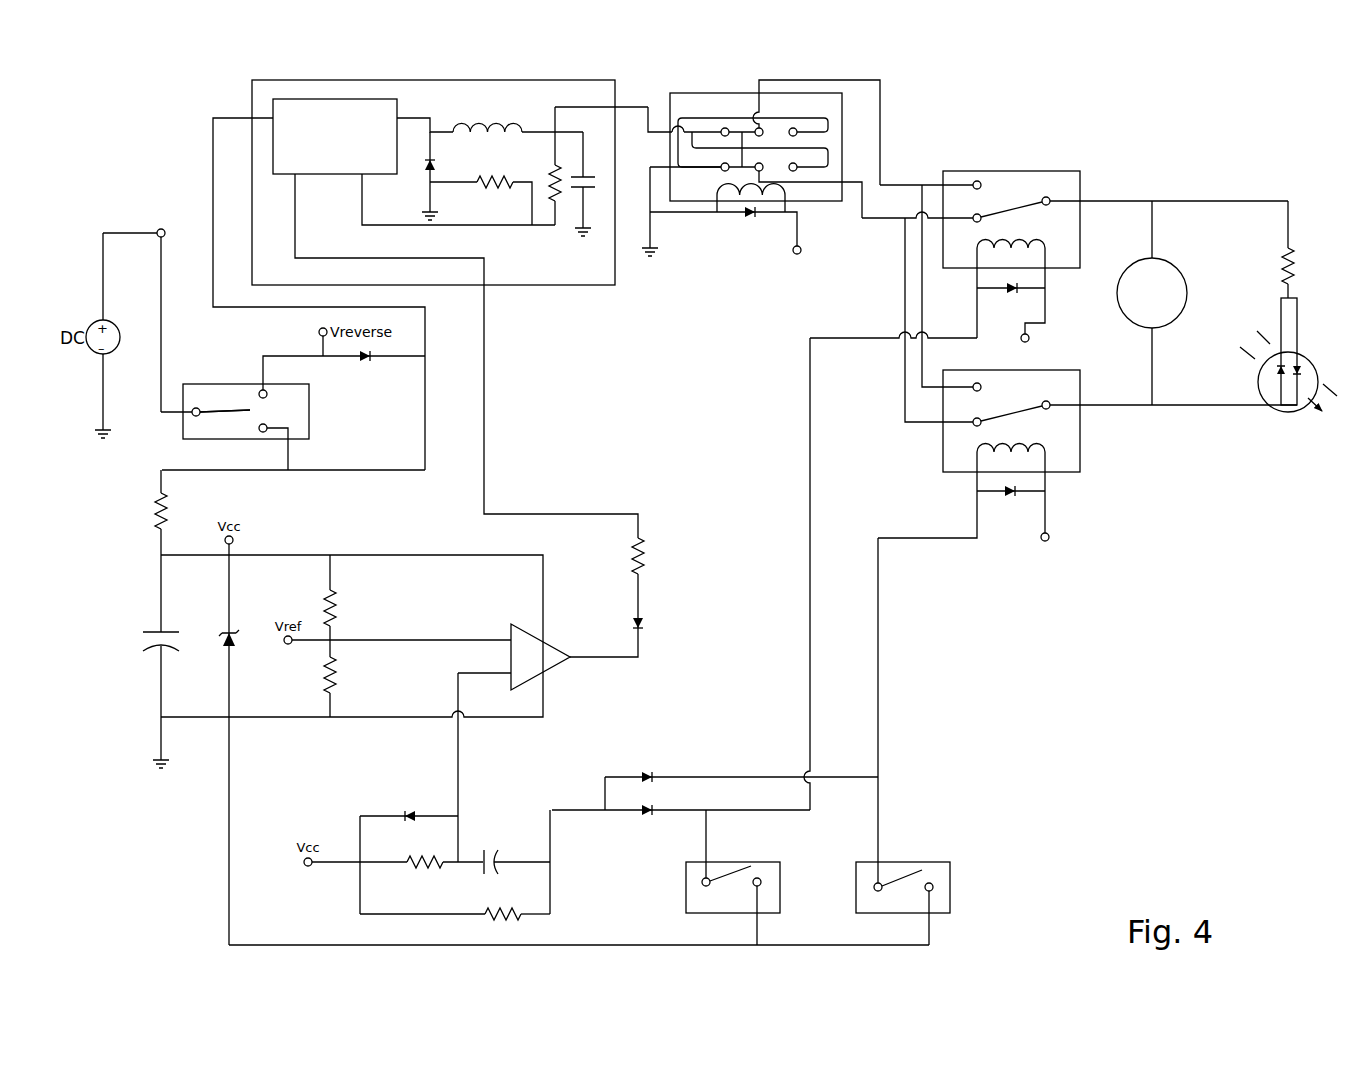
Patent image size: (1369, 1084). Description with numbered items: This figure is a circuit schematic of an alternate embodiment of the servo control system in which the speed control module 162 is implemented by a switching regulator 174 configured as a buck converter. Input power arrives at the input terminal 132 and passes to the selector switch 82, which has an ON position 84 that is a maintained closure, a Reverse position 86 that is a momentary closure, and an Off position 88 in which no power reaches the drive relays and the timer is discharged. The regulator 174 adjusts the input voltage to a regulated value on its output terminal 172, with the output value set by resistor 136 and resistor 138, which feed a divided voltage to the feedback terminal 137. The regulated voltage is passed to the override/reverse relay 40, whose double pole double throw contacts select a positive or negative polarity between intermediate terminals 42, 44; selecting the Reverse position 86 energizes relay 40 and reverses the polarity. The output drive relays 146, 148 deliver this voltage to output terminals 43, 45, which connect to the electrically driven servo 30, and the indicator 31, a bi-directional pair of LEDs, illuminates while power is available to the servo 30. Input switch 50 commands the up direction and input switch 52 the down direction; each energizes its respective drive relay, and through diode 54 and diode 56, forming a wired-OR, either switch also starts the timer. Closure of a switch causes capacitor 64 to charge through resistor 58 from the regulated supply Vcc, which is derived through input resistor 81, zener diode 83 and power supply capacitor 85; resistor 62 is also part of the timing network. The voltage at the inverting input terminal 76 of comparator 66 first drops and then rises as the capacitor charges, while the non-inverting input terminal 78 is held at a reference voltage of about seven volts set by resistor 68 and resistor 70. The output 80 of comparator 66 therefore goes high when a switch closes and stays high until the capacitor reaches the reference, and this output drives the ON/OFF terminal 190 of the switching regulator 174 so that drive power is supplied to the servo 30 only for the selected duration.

The electrically driven servo 30 is at (1193, 272).
The indicator 31 is at (1312, 349).
The override/reverse relay 40 is at (713, 91).
The intermediate terminal 42 is at (898, 177).
The output terminal 43 is at (1095, 197).
The intermediate terminal 44 is at (876, 223).
The output terminal 45 is at (1100, 396).
The input switch 50 is at (786, 892).
The input switch 52 is at (959, 892).
The diode 54 is at (649, 765).
The diode 56 is at (639, 824).
The resistor 58 is at (418, 873).
The resistor 62 is at (479, 904).
The capacitor 64 is at (504, 870).
The comparator 66 is at (468, 621).
The resistor 68 is at (344, 598).
The resistor 70 is at (346, 668).
The inverting input terminal 76 is at (504, 671).
The non-inverting input terminal 78 is at (504, 636).
The output 80 is at (589, 661).
The input resistor 81 is at (151, 521).
The selector switch 82 is at (293, 398).
The zener diode 83 is at (238, 632).
The ON position 84 is at (256, 435).
The power supply capacitor 85 is at (144, 637).
The Reverse position 86 is at (258, 384).
The Off position 88 is at (282, 411).
The input terminal 132 is at (159, 226).
The resistor 136 is at (548, 178).
The feedback terminal 137 is at (357, 177).
The resistor 138 is at (490, 170).
The output drive relay 146 is at (1015, 168).
The output drive relay 148 is at (1084, 471).
The speed control module 162 is at (417, 296).
The output terminal 172 is at (648, 103).
The switching regulator 174 is at (363, 95).
The ON/OFF terminal 190 is at (289, 177).